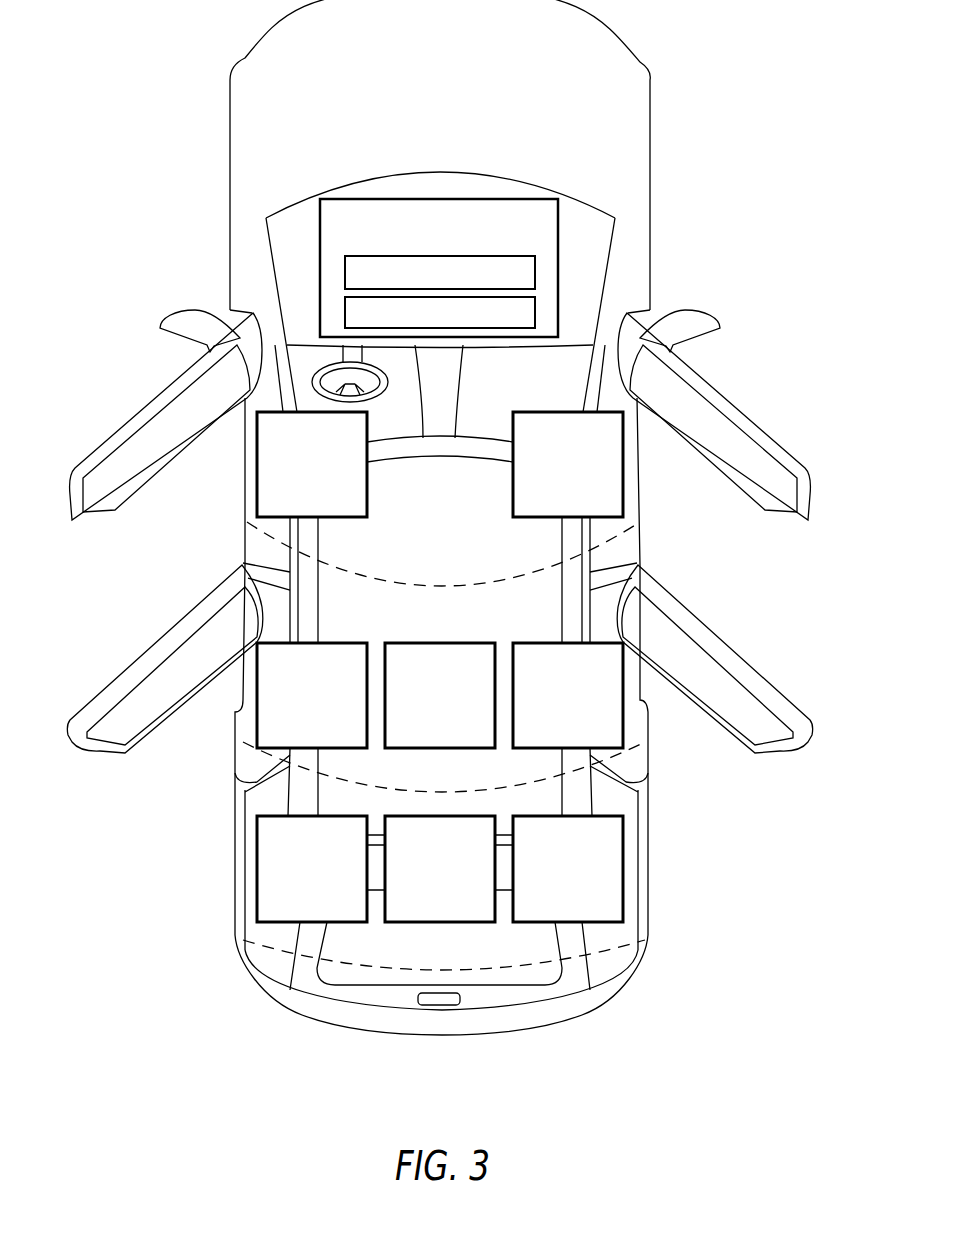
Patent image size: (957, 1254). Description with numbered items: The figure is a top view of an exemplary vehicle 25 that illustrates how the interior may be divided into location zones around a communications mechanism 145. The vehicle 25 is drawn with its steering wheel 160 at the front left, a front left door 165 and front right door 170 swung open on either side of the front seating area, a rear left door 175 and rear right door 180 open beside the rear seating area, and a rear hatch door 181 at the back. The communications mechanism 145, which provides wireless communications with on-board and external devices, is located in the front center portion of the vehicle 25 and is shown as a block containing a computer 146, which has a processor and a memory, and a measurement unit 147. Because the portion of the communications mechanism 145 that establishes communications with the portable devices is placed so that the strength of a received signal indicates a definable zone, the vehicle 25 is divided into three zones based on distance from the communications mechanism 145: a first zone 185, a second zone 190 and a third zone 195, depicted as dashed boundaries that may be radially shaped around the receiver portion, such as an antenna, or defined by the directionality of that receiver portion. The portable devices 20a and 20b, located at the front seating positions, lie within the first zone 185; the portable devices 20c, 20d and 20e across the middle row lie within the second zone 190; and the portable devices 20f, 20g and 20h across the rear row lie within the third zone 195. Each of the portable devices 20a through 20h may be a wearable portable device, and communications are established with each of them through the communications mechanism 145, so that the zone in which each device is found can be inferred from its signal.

The vehicle 25 is at (650, 145).
The communications mechanism 145 is at (500, 199).
The computer 146 is at (536, 268).
The measurement unit 147 is at (536, 303).
The steering wheel 160 is at (325, 367).
The front left door 165 is at (122, 416).
The front right door 170 is at (758, 418).
The rear left door 175 is at (122, 674).
The rear right door 180 is at (758, 674).
The rear hatch door 181 is at (575, 973).
The first zone 185 is at (443, 552).
The second zone 190 is at (444, 694).
The third zone 195 is at (444, 951).
The portable device 20a is at (312, 464).
The portable device 20b is at (568, 464).
The portable device 20c is at (312, 695).
The portable device 20d is at (440, 695).
The portable device 20e is at (568, 695).
The portable device 20f is at (312, 869).
The portable device 20g is at (440, 869).
The portable device 20h is at (568, 869).